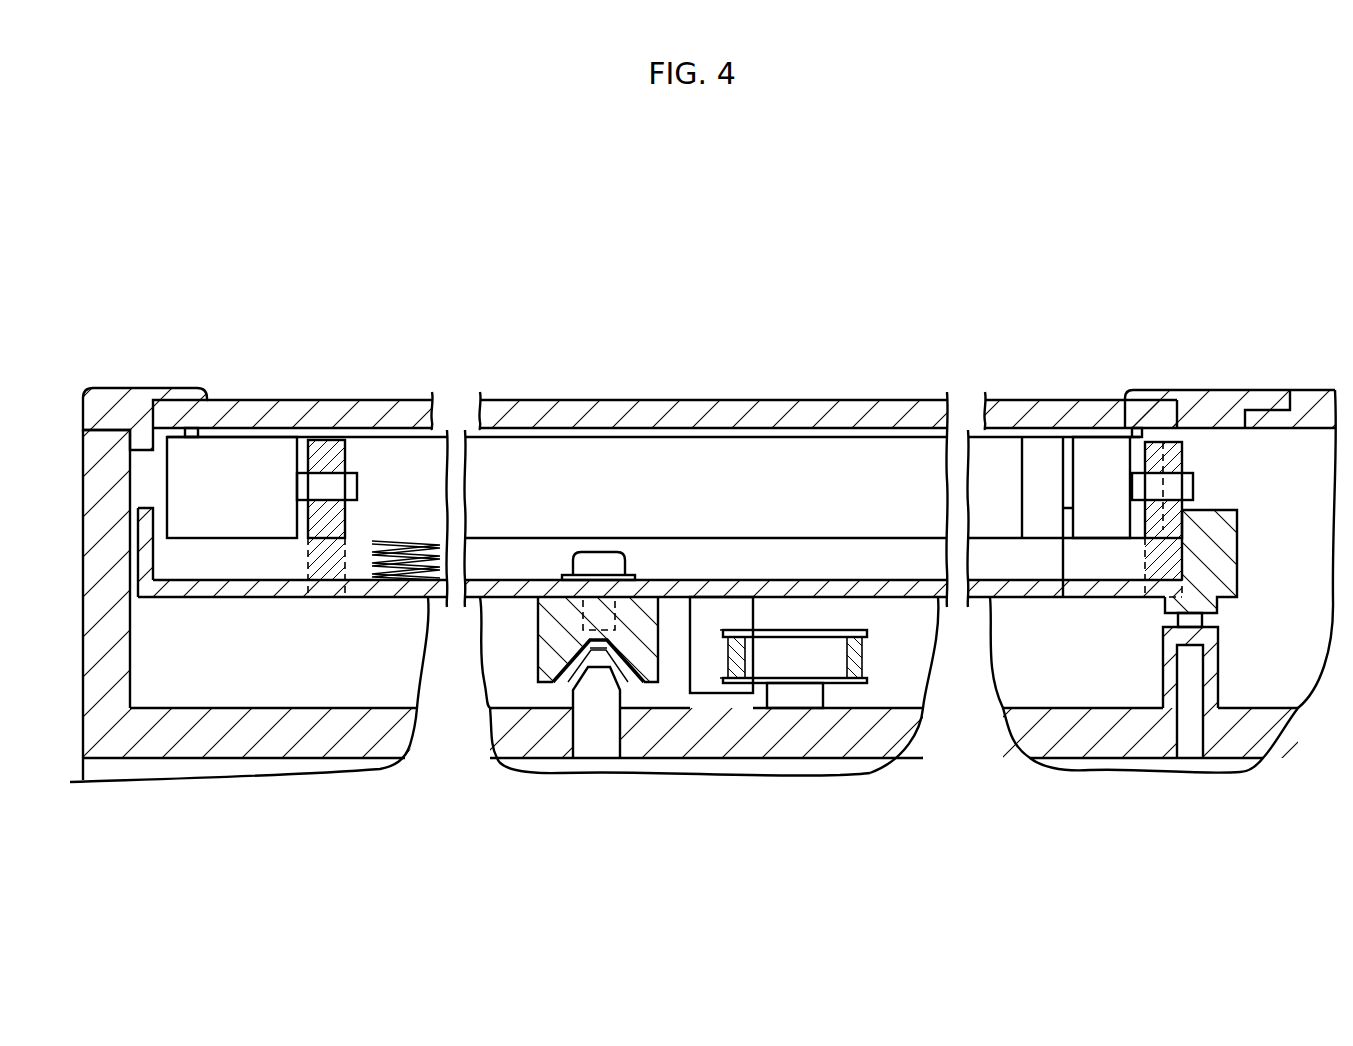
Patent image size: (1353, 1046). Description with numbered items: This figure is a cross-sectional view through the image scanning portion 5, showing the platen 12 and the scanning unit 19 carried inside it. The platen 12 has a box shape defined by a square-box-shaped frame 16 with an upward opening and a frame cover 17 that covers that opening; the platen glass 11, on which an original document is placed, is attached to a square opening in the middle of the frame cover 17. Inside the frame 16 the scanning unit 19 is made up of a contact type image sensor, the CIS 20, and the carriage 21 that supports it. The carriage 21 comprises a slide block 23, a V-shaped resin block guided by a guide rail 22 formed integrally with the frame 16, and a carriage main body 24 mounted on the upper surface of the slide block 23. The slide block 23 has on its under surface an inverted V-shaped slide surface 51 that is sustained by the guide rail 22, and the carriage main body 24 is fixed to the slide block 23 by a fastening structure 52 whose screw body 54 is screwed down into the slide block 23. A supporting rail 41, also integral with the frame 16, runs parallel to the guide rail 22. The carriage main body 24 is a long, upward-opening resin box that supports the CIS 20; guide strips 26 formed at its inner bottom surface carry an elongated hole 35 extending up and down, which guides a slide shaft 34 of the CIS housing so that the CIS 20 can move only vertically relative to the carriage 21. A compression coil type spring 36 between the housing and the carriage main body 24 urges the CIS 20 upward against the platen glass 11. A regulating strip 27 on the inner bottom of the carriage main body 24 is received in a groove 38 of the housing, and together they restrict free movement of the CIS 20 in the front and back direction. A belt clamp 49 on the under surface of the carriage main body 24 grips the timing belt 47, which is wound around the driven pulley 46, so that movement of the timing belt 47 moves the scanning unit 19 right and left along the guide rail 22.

The image scanning portion 5 is at (301, 352).
The platen glass 11 is at (620, 408).
The platen 12 is at (212, 762).
The frame 16 is at (308, 743).
The frame cover 17 is at (166, 388).
The scanning unit 19 is at (292, 571).
The contact type image sensor (CIS) 20 is at (208, 540).
The carriage 21 is at (257, 612).
The guide rail 22 is at (573, 672).
The slide block 23 is at (538, 603).
The carriage main body 24 is at (372, 597).
The guide strips 26 is at (308, 560).
The regulating strip 27 is at (1062, 555).
The slide shaft 34 is at (357, 487).
The elongated hole 35 is at (325, 527).
The compression coil type spring 36 is at (410, 585).
The groove 38 is at (1076, 490).
The supporting rail 41 is at (1218, 637).
The driven pulley 46 is at (819, 627).
The timing belt 47 is at (855, 663).
The belt clamp 49 is at (705, 682).
The slide surface 51 is at (612, 668).
The fastening structure 52 is at (626, 562).
The screw body 54 is at (592, 563).